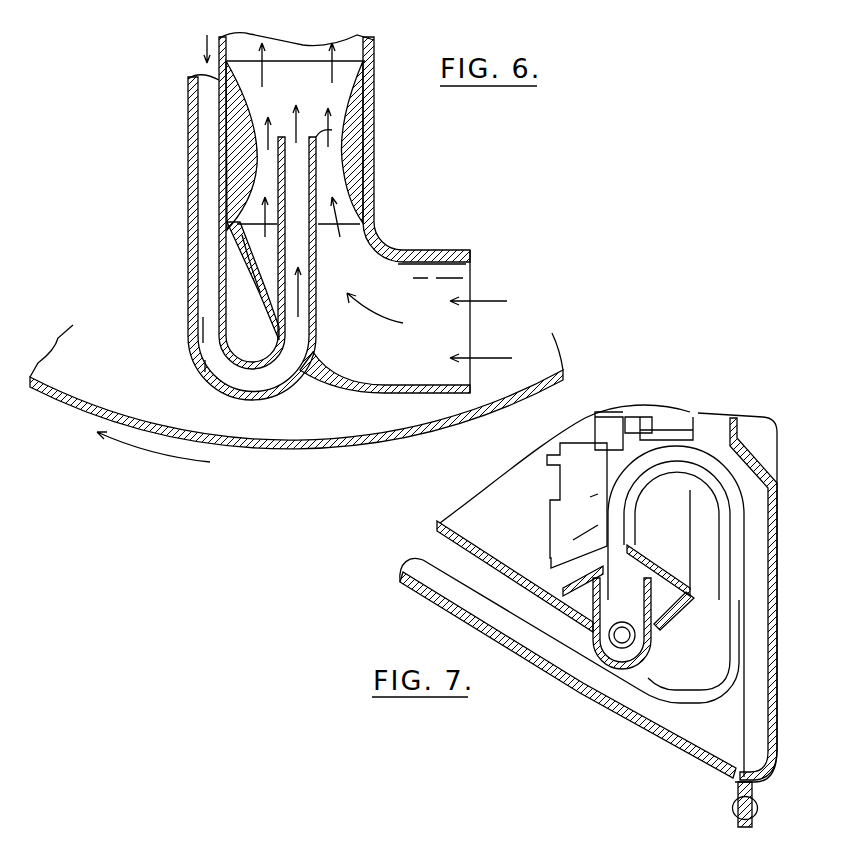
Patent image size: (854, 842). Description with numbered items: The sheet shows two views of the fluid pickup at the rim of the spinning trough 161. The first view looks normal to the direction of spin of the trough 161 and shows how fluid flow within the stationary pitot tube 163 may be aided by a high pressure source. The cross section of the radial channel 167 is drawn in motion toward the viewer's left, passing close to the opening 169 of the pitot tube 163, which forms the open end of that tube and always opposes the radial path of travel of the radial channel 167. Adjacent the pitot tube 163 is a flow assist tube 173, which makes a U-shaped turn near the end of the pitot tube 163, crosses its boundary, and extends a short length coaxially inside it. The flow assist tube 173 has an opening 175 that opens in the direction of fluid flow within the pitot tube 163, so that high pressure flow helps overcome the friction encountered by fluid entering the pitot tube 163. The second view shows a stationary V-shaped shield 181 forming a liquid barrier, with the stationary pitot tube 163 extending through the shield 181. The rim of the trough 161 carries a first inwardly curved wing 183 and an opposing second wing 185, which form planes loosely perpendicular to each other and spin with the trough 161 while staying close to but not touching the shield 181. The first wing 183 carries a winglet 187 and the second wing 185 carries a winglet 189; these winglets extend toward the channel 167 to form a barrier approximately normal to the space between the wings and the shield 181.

In FIG. 7, the trough 161 is at (423, 560).
In FIG. 6, the pitot tube 163 is at (372, 168).
In FIG. 7, the pitot tube 163 is at (612, 697).
In FIG. 6, the radial channel 167 is at (300, 426).
In FIG. 7, the radial channel 167 is at (637, 665).
In FIG. 6, the opening 169 is at (470, 287).
In FIG. 6, the flow assist tube 173 is at (188, 206).
In FIG. 6, the opening of flow assist tube 175 is at (347, 127).
In FIG. 7, the V-shaped shield 181 is at (607, 420).
In FIG. 7, the first inwardly curved wing 183 is at (667, 432).
In FIG. 7, the second wing 185 is at (568, 462).
In FIG. 7, the winglet 187 is at (657, 610).
In FIG. 7, the winglet 189 is at (570, 587).